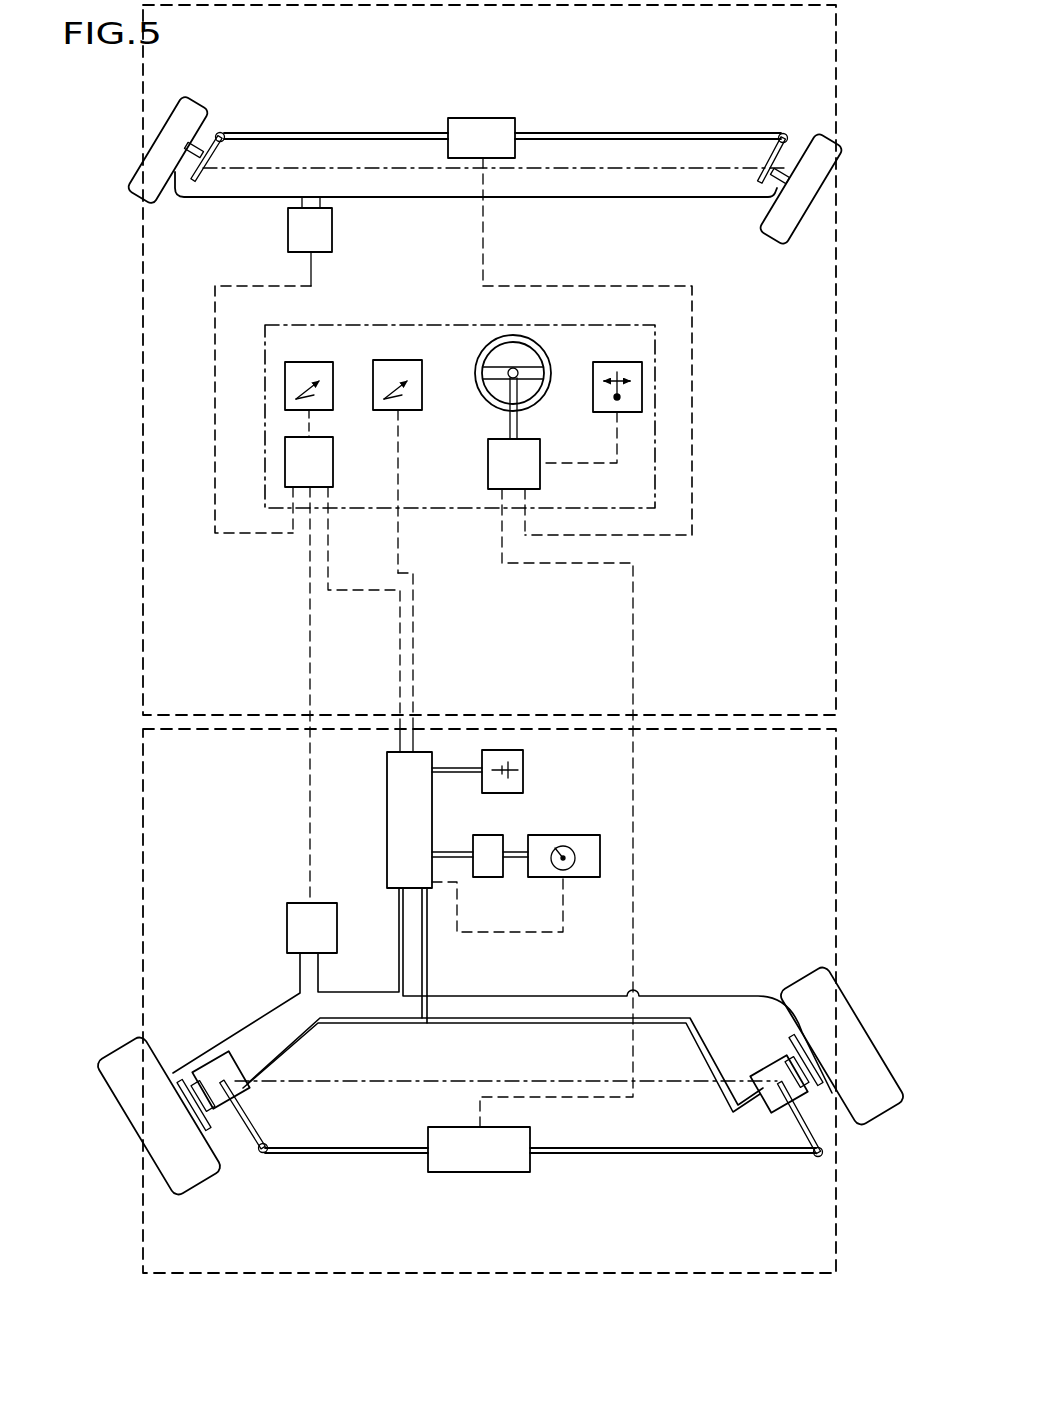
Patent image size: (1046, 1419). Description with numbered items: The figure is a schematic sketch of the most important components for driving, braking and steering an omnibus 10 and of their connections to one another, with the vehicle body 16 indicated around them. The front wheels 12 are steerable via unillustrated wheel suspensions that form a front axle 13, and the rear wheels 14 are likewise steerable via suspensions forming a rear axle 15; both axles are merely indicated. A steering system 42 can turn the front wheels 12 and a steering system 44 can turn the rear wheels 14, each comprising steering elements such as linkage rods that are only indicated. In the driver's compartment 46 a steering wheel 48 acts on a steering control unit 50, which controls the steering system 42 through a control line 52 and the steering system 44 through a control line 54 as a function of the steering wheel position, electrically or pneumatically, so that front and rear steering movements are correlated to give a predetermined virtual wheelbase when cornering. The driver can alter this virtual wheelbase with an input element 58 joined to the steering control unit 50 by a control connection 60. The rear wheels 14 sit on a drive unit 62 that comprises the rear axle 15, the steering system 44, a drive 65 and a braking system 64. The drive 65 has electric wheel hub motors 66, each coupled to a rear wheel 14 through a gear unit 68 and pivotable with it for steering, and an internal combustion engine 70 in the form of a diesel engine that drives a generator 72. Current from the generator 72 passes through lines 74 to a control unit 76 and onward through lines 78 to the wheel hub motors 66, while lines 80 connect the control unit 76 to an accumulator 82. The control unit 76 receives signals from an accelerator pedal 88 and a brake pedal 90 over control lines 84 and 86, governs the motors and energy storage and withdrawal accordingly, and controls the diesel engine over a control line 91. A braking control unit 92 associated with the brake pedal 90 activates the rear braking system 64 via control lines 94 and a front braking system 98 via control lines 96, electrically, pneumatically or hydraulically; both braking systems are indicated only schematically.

The omnibus 10 is at (845, 90).
The front wheels 12 is at (205, 110).
The front axle 13 is at (594, 163).
The rear wheels 14 is at (132, 1117).
The rear axle 15 is at (689, 1088).
The body 16 is at (838, 647).
The steering system 42 is at (488, 113).
The steering system 44 is at (436, 1178).
The driver's compartment 46 is at (432, 323).
The steering wheel 48 is at (490, 400).
The steering control unit 50 is at (488, 462).
The control line 52 is at (522, 288).
The control line 54 is at (634, 624).
The input element 58 is at (594, 368).
The control connection 60 is at (615, 437).
The drive unit 62 is at (141, 846).
The braking system 64 is at (283, 930).
The drive 65 is at (606, 875).
The wheel hub motors 66 is at (249, 1084).
The gear unit 68 is at (205, 1114).
The internal combustion engine 70 is at (583, 833).
The generator 72 is at (514, 818).
The lines 74 is at (460, 855).
The control unit 76 is at (387, 805).
The lines 78 is at (343, 1022).
The lines 80 is at (452, 770).
The accumulator 82 is at (524, 780).
The control line 84 is at (415, 640).
The control line 86 is at (399, 662).
The accelerator pedal 88 is at (420, 375).
The brake pedal 90 is at (333, 375).
The control line 91 is at (564, 928).
The braking control unit 92 is at (333, 462).
The control lines 94 is at (308, 624).
The control lines 96 is at (311, 278).
The braking system 98 is at (284, 230).